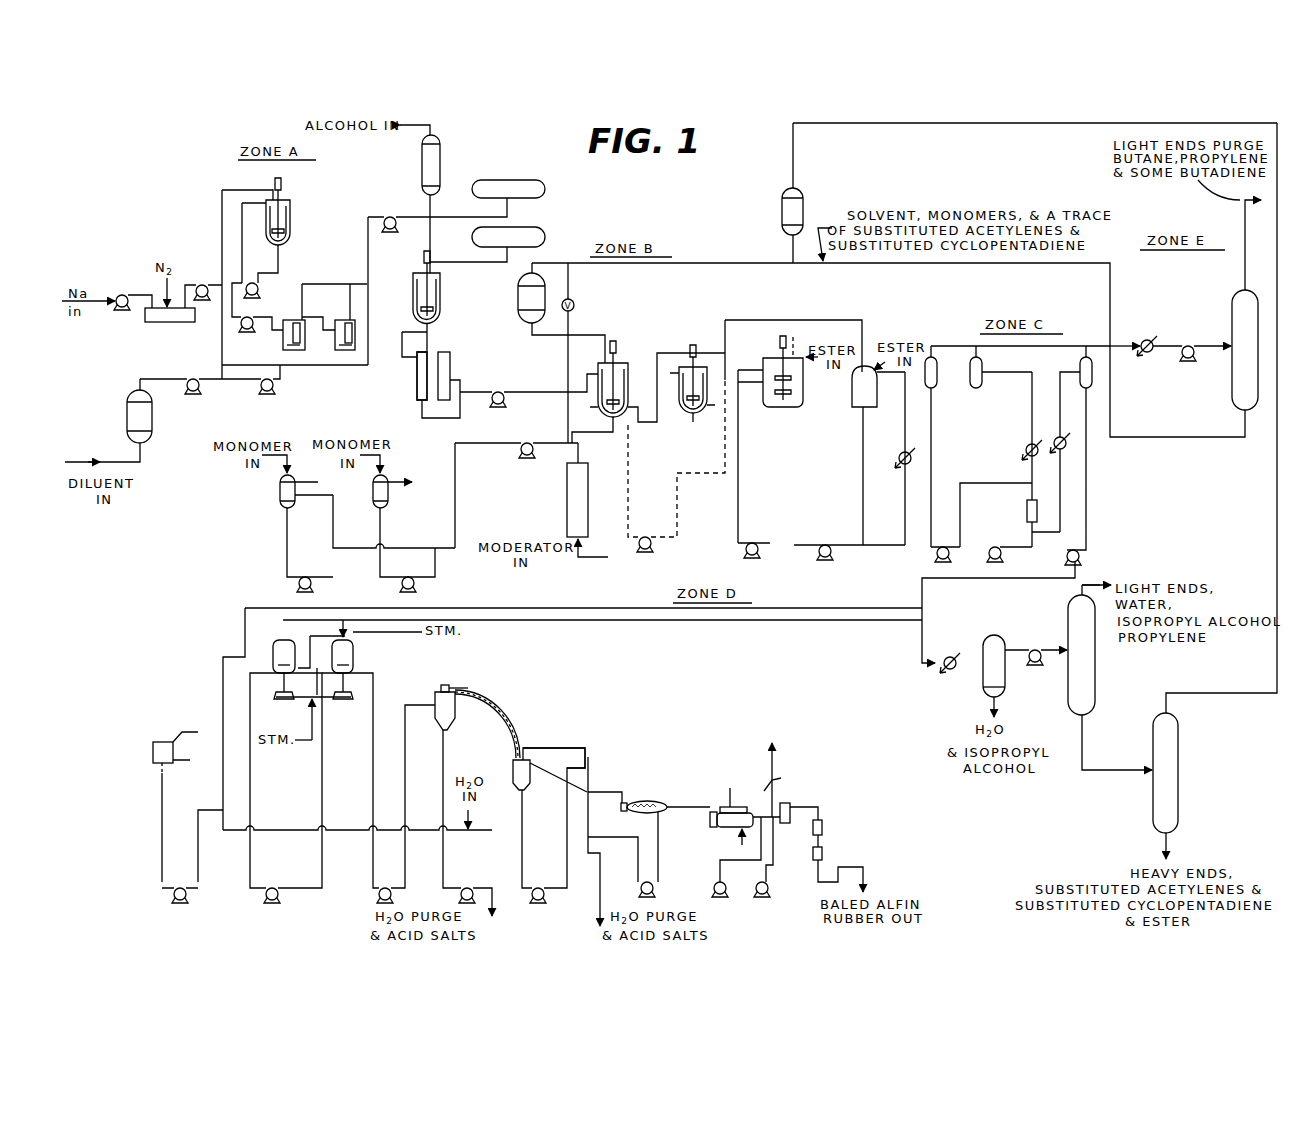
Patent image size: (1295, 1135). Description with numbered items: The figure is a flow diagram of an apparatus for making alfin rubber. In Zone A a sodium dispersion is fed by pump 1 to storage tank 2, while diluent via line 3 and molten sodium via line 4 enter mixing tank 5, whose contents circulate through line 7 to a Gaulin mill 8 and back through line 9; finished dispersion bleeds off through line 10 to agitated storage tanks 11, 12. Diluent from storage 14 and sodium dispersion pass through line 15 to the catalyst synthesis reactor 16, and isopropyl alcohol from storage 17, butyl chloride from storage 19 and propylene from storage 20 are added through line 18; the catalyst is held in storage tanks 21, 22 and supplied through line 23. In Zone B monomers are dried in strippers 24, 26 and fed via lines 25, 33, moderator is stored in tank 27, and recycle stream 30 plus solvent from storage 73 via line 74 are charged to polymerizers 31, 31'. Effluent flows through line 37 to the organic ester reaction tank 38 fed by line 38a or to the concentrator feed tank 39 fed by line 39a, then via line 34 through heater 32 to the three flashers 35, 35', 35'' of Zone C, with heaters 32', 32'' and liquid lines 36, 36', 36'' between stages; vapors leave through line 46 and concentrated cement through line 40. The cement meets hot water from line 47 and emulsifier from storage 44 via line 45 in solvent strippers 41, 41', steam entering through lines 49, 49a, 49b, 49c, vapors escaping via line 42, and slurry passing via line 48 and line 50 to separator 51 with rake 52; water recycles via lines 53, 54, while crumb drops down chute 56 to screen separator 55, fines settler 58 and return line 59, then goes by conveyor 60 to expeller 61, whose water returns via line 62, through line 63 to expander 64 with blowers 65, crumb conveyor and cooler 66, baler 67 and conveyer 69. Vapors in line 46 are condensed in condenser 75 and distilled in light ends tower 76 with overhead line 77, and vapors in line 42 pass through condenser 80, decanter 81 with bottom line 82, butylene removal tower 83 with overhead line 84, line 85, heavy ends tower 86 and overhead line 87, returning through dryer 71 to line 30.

The pump 1 is at (116, 297).
The storage tank 2 is at (165, 322).
The line 3 is at (152, 379).
The line 4 is at (222, 196).
The mixing tank 5 is at (290, 216).
The line 7 is at (282, 258).
The Gaulin mill 8 is at (254, 292).
The line 9 is at (242, 233).
The line 10 is at (241, 326).
The storage tank 11 is at (302, 341).
The storage tank 12 is at (333, 320).
The diluent storage 14 is at (127, 410).
The line 15 is at (368, 257).
The catalyst synthesis reactor 16 is at (440, 291).
The isopropyl alcohol storage 17 is at (422, 160).
The line 18 is at (430, 233).
The butyl chloride storage 19 is at (532, 180).
The propylene storage 20 is at (508, 230).
The catalyst storage tank 21 is at (417, 381).
The catalyst storage tank 22 is at (450, 352).
The line 23 is at (484, 392).
The stripper 24 is at (280, 497).
The line 25 is at (416, 548).
The stripper 26 is at (388, 496).
The moderator tank 27 is at (567, 497).
The recycle stream 30 is at (630, 264).
The polymerization reactor 31 is at (623, 372).
The polymerization reactor 31' is at (680, 397).
The first stage heater 32 is at (891, 449).
The second stage heater 32' is at (1014, 445).
The third stage heater 32'' is at (1085, 456).
The line 33 is at (490, 444).
The line 34 is at (905, 502).
The flasher 35 is at (944, 387).
The flasher 35' is at (960, 368).
The flash and surge tank 35'' is at (1065, 368).
The line 36 is at (946, 467).
The flash tank outlet line 36' is at (1014, 436).
The line 36'' is at (1038, 536).
The line 37 is at (717, 353).
The organic ester reaction tank 38 is at (765, 363).
The line 38a is at (800, 348).
The concentrator feed tank 39 is at (850, 403).
The line 39a is at (872, 368).
The line 40 is at (1061, 580).
The solvent stripper 41 is at (273, 646).
The solvent stripper 41' is at (366, 655).
The overhead collection line 42 is at (776, 622).
The emulsifying agent storage 44 is at (153, 742).
The line 45 is at (198, 873).
The line 46 is at (1115, 346).
The line 47 is at (223, 667).
The line 48 is at (250, 762).
The steam line 49 is at (310, 739).
The line 49a is at (407, 626).
The line 49b is at (295, 700).
The line 49c is at (288, 619).
The line 50 is at (373, 762).
The separator 51 is at (448, 730).
The mechanical rake 52 is at (455, 685).
The line 53 is at (443, 784).
The line 54 is at (492, 853).
The dewatering screen separator 55 is at (513, 770).
The chute 56 is at (514, 714).
The secondary fines settler 58 is at (590, 758).
The line 59 is at (562, 748).
The conveyor 60 is at (618, 792).
The expeller 61 is at (657, 801).
The line 62 is at (638, 863).
The line 63 is at (683, 805).
The expander 64 is at (740, 807).
The blowers 65 is at (736, 898).
The crumb conveyor and cooler 66 is at (790, 803).
The baler 67 is at (822, 823).
The conveyer 69 is at (820, 872).
The dryer 71 is at (803, 212).
The solvent storage 73 is at (518, 293).
The line 74 is at (547, 336).
The condenser 75 is at (1148, 341).
The light ends tower 76 is at (1232, 312).
The line 77 is at (1245, 273).
The condenser 80 is at (948, 671).
The decanter 81 is at (1000, 631).
The line 82 is at (994, 697).
The butylene removal tower 83 is at (1095, 673).
The line 84 is at (1088, 585).
The line 85 is at (1113, 770).
The heavy ends tower 86 is at (1178, 750).
The line 87 is at (1277, 491).